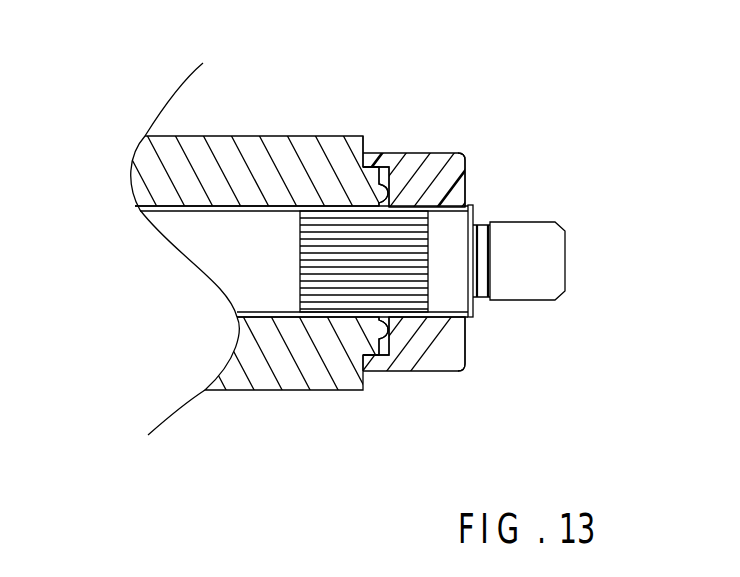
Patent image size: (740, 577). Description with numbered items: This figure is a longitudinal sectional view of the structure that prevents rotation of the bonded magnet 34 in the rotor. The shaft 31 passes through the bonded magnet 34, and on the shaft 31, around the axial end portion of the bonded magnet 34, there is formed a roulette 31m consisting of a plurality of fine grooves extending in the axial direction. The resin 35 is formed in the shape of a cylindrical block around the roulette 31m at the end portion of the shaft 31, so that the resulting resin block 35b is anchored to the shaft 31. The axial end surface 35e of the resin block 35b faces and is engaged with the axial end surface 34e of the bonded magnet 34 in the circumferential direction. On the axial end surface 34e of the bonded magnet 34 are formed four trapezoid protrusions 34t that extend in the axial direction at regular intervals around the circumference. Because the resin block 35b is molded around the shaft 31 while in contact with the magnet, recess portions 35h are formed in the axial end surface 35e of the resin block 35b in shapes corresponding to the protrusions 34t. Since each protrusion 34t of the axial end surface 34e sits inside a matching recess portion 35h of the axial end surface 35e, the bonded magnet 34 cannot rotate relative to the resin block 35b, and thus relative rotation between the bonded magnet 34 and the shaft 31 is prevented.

The shaft 31 is at (331, 286).
The roulette 31m is at (407, 273).
The bonded magnet 34 is at (247, 136).
The axial end surface of the bonded magnet 34e is at (373, 143).
The trapezoid protrusion 34t is at (382, 178).
The resin 35 is at (447, 151).
The resin block 35b is at (455, 176).
The axial end surface of the resin block 35e is at (392, 334).
The recess portion 35h is at (412, 180).